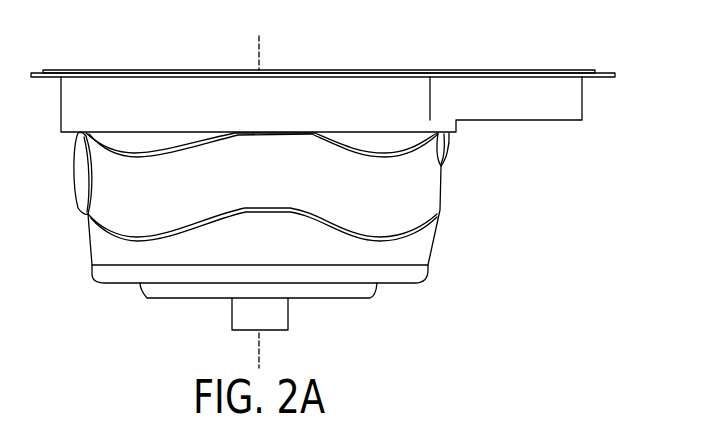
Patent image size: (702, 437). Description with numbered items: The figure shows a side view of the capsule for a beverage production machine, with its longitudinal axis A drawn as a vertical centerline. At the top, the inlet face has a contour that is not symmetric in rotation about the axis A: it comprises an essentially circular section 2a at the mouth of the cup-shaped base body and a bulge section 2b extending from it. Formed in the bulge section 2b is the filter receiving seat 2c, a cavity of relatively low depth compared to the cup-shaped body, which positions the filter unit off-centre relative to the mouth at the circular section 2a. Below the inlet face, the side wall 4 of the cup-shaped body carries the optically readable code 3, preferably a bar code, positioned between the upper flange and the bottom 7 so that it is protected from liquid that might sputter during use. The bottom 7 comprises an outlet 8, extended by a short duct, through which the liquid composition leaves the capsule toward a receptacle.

The longitudinal axis A is at (258, 190).
The circular section 2a is at (193, 70).
The bulge section 2b is at (522, 70).
The filter receiving seat 2c is at (519, 121).
The optically readable code 3 is at (82, 172).
The side wall 4 is at (442, 185).
The bottom 7 is at (375, 290).
The outlet 8 is at (240, 318).